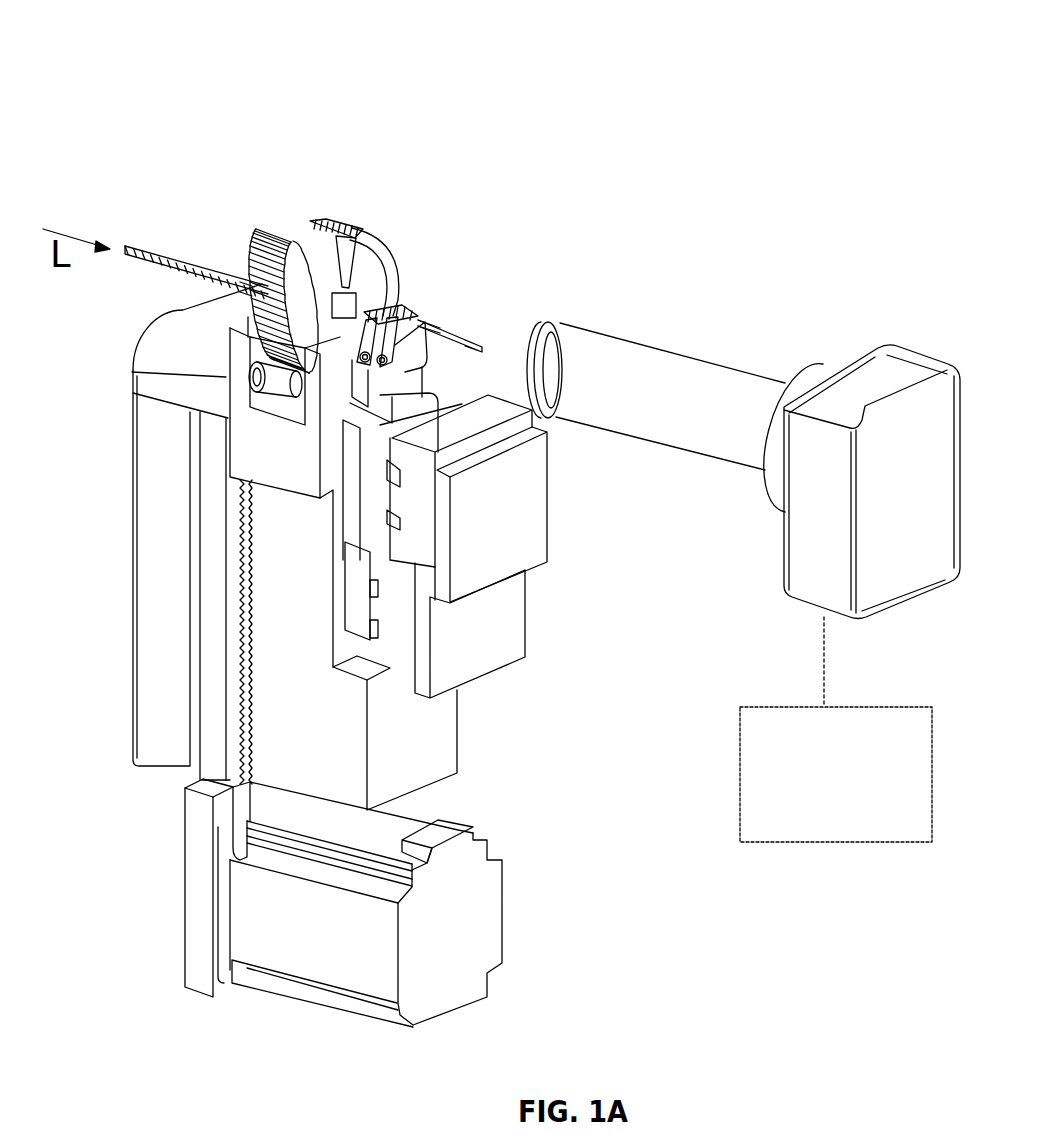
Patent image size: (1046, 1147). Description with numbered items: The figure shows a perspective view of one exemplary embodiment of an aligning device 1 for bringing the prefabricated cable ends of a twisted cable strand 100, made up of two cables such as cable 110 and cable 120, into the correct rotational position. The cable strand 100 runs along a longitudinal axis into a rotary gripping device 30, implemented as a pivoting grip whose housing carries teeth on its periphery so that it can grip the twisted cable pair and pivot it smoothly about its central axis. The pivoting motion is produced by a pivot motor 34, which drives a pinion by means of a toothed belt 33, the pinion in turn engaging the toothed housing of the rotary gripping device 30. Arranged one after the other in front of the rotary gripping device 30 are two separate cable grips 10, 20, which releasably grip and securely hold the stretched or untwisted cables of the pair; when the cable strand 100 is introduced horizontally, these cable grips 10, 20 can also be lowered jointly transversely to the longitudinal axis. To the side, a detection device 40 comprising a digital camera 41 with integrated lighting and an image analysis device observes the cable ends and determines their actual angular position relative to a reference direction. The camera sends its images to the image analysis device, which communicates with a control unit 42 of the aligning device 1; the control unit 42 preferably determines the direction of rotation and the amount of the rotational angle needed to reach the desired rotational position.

The aligning device 1 is at (211, 32).
The cable grip 10 is at (390, 305).
The cable grip 20 is at (365, 312).
The rotary gripping device 30 is at (313, 262).
The toothed belt 33 is at (213, 600).
The pivot motor 34 is at (333, 963).
The detection device 40 is at (748, 366).
The digital camera 41 is at (872, 482).
The control unit 42 is at (740, 784).
The cable strand 100 is at (158, 248).
The cable 110 is at (213, 268).
The cable 120 is at (225, 268).